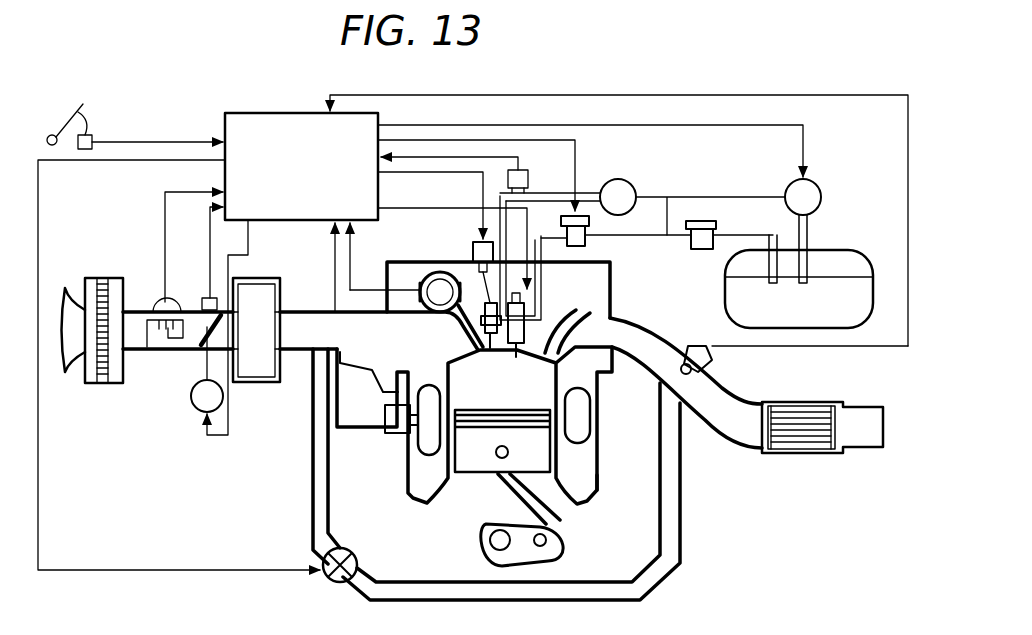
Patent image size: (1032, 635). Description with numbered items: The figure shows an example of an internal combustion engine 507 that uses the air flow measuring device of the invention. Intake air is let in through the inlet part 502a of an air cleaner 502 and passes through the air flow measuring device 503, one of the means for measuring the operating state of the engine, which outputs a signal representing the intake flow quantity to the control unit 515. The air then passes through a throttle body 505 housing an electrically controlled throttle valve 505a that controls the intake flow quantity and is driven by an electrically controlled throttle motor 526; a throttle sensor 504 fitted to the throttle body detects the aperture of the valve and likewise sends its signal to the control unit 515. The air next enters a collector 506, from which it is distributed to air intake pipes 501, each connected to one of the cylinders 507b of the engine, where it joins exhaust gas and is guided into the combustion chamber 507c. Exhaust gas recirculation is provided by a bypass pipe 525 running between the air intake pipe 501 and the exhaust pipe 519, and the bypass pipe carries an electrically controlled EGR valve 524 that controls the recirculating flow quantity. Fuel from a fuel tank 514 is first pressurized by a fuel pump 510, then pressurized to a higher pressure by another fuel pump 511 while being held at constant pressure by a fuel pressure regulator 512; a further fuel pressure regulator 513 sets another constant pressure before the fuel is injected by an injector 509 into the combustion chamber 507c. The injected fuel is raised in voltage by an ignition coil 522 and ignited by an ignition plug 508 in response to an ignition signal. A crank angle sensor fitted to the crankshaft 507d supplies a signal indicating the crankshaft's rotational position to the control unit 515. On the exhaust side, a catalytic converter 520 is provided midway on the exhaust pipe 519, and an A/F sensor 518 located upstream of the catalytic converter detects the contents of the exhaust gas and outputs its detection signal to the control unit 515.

The air intake pipe 501 is at (290, 357).
The air cleaner 502 is at (100, 385).
The inlet part 502a is at (68, 288).
The air flow measuring device 503 is at (155, 297).
The throttle sensor 504 is at (200, 297).
The throttle body 505 is at (171, 338).
The electrically controlled throttle valve 505a is at (216, 331).
The collector 506 is at (253, 378).
The internal combustion engine 507 is at (600, 296).
The cylinder 507b is at (582, 482).
The combustion chamber 507c is at (548, 397).
The crankshaft 507d is at (485, 545).
The ignition plug 508 is at (490, 350).
The injector 509 is at (515, 355).
The fuel pump 510 is at (830, 178).
The fuel pump 511 is at (637, 186).
The fuel pressure regulator 512 is at (699, 247).
The fuel pressure regulator 513 is at (592, 242).
The fuel tank 514 is at (838, 249).
The control unit 515 is at (226, 115).
The A/F sensor 518 is at (712, 356).
The exhaust pipe 519 is at (732, 455).
The catalytic converter 520 is at (815, 450).
The ignition coil 522 is at (470, 245).
The EGR valve 524 is at (320, 560).
The bypass pipe 525 is at (690, 505).
The electrically controlled throttle motor 526 is at (199, 409).